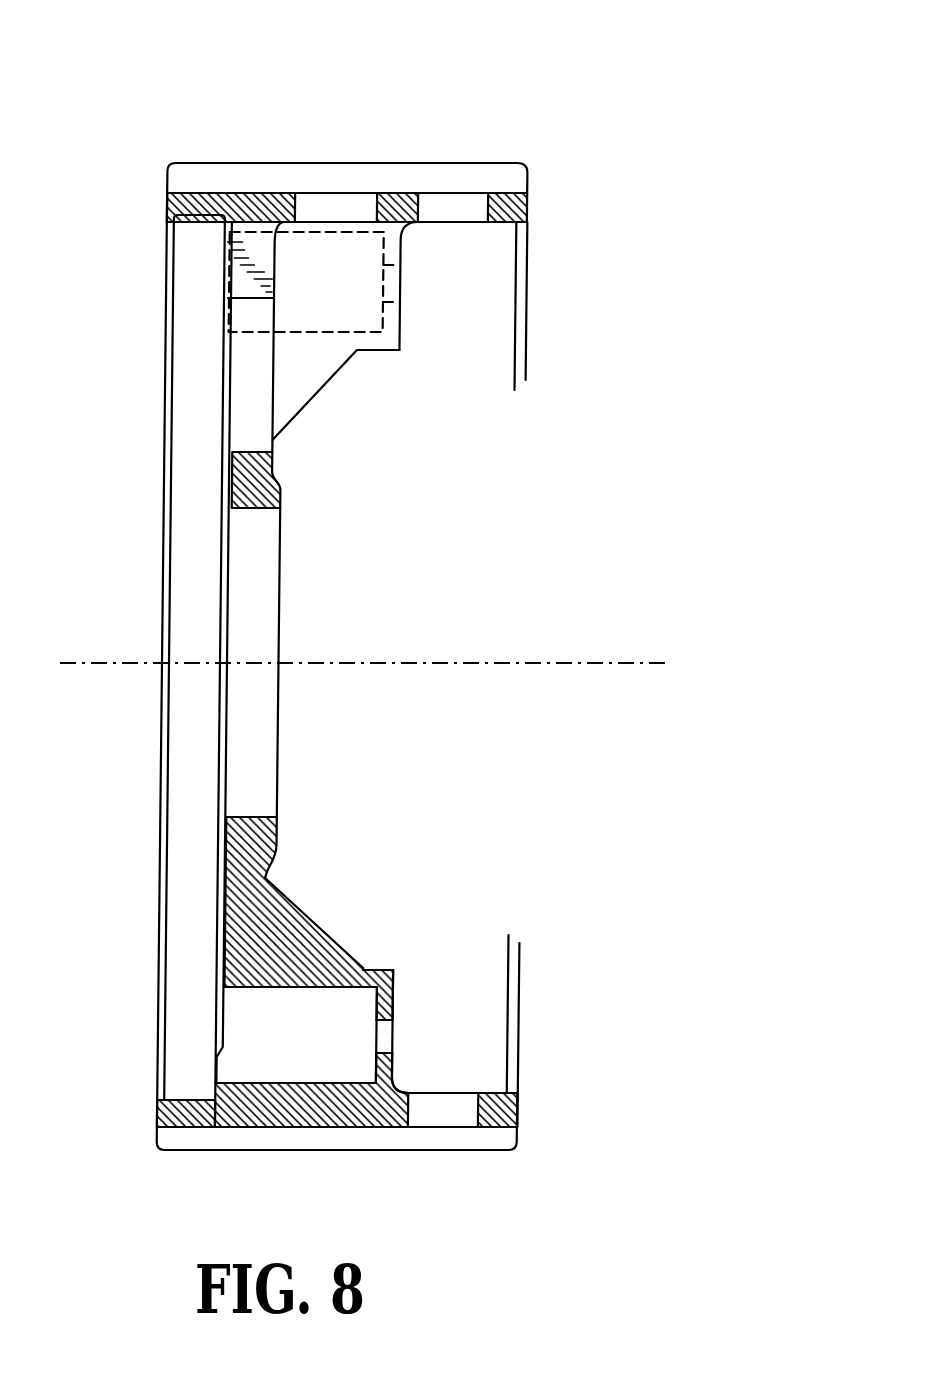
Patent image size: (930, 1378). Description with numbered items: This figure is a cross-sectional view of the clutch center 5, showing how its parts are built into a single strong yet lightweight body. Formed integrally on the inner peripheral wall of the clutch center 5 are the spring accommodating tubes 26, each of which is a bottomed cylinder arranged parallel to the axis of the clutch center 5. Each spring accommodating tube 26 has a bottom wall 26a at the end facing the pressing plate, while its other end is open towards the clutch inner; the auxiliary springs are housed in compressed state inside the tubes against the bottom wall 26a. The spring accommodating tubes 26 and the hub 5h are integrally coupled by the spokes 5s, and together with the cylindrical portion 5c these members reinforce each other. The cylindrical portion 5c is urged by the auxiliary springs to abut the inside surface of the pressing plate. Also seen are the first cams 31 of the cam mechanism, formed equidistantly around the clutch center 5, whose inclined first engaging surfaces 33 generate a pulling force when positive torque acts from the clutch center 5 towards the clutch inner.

The clutch center 5 is at (466, 135).
The spokes 5s is at (242, 408).
The hub 5h is at (275, 485).
The cylindrical portion 5c is at (327, 1115).
The spring accommodating tube 26 is at (344, 302).
The bottom wall 26a is at (392, 1010).
The first cam 31 is at (235, 243).
The first engaging surface 33 is at (251, 276).